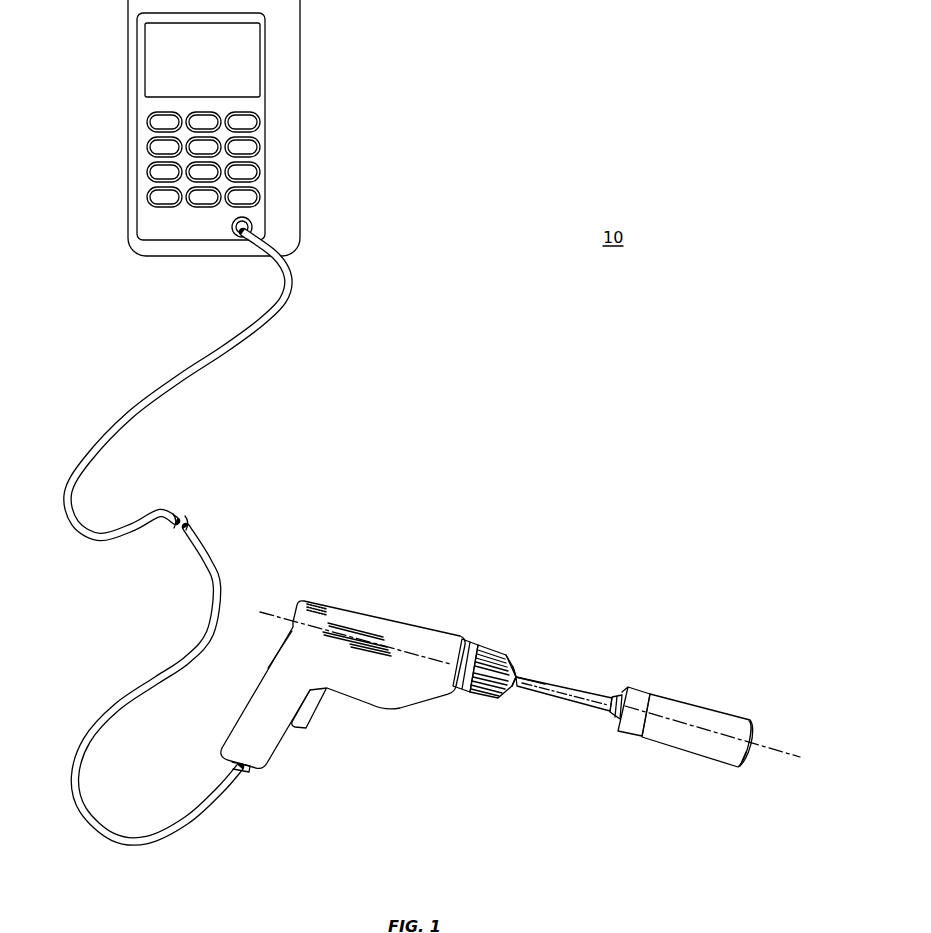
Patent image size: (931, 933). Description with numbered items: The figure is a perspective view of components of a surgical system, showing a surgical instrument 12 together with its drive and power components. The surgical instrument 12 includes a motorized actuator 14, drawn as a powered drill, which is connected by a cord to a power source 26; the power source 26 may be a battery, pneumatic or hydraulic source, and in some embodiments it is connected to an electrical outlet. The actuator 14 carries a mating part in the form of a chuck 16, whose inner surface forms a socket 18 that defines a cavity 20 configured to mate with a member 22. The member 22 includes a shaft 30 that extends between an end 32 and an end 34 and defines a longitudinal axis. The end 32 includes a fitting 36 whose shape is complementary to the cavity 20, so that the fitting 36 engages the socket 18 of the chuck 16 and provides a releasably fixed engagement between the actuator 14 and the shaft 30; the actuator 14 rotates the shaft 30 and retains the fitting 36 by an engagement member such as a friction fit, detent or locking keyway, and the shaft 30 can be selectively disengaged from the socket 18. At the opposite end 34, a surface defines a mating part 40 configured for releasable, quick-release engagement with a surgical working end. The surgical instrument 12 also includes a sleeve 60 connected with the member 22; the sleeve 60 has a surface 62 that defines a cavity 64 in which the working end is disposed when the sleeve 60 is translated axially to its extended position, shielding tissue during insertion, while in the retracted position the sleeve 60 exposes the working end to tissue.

The surgical instrument 12 is at (740, 661).
The motorized actuator 14 is at (383, 587).
The chuck 16 is at (483, 683).
The socket 18 is at (519, 670).
The cavity 20 is at (514, 682).
The member 22 is at (582, 620).
The power source 26 is at (128, 172).
The shaft 30 is at (585, 702).
The end 32 is at (527, 677).
The end 34 is at (615, 697).
The fitting 36 is at (516, 672).
The mating part 40 is at (647, 690).
The sleeve 60 is at (723, 723).
The surface 62 is at (752, 730).
The cavity 64 is at (747, 753).